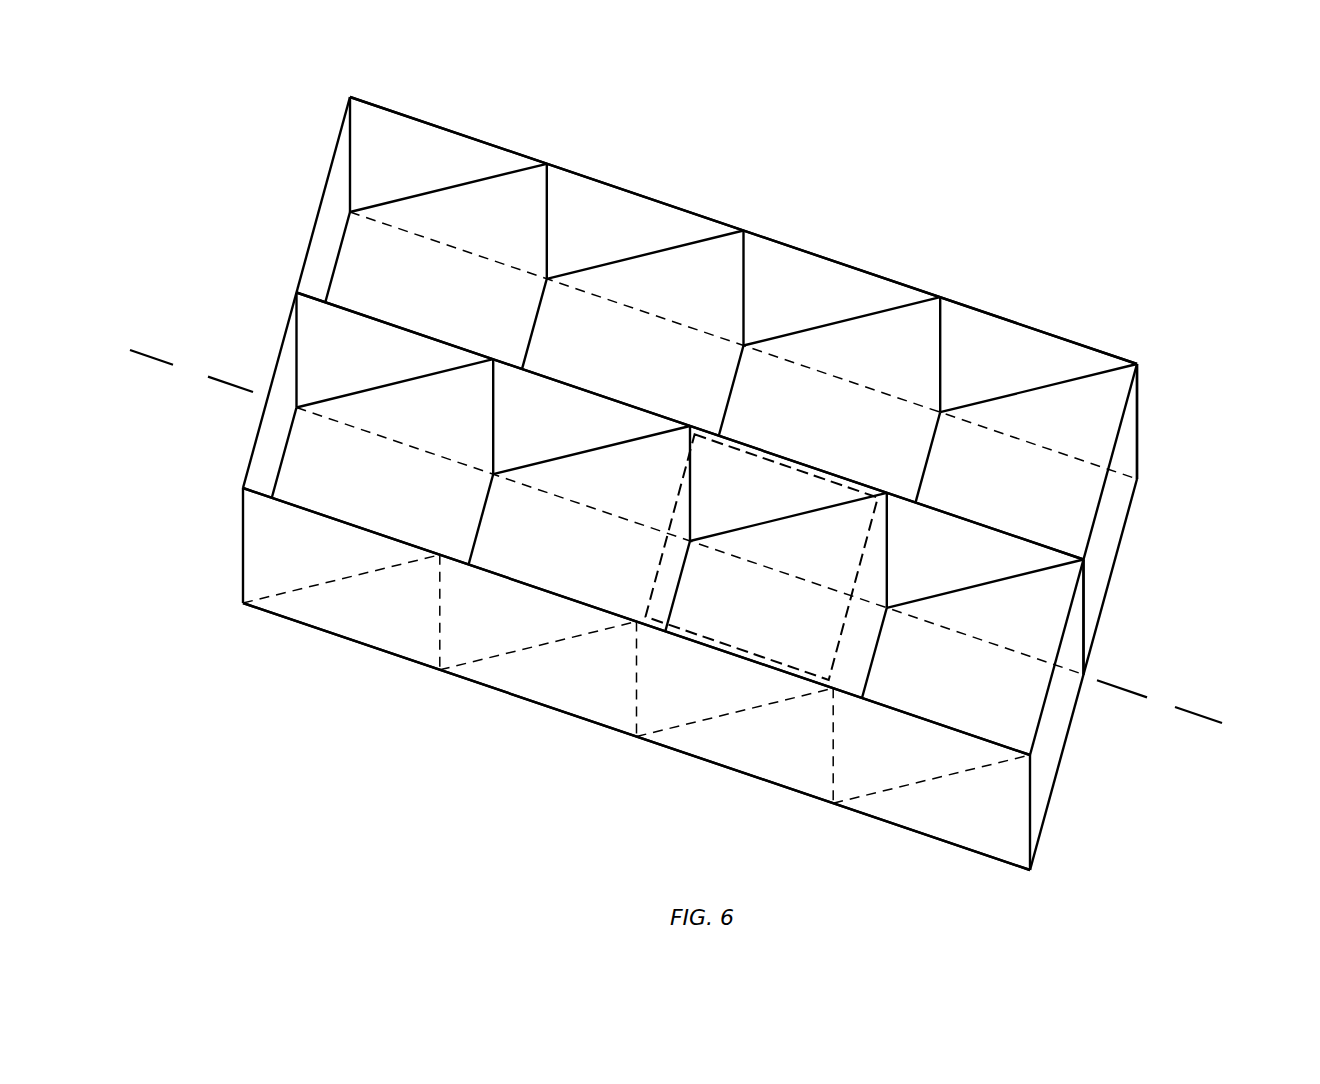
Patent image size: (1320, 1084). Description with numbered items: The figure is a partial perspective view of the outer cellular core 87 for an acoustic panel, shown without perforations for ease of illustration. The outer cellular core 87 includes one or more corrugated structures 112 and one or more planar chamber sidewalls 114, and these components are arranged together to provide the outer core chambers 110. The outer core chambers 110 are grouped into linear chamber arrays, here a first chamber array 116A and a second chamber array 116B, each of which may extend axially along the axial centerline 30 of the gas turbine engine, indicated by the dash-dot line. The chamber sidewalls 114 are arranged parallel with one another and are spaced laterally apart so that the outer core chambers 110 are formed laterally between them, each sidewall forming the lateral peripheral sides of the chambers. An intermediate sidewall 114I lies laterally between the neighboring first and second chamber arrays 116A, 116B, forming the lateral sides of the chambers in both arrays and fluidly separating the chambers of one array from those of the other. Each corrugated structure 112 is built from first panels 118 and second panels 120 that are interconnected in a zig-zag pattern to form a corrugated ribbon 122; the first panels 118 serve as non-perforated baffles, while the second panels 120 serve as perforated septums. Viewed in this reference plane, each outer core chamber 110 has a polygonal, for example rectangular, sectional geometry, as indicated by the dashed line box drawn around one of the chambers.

The outer cellular core 87 is at (1110, 186).
The first chamber array 116A is at (286, 140).
The second chamber array 116B is at (250, 342).
The outer core chamber 110 is at (440, 157).
The first panel 118 is at (513, 195).
The second panel 120 is at (317, 222).
The chamber sidewall 114 is at (1140, 443).
The intermediate sidewall 114I is at (1085, 617).
The corrugated structure 112 is at (1152, 559).
The corrugated ribbon 122 is at (1102, 503).
The axial centerline 30 is at (1215, 717).